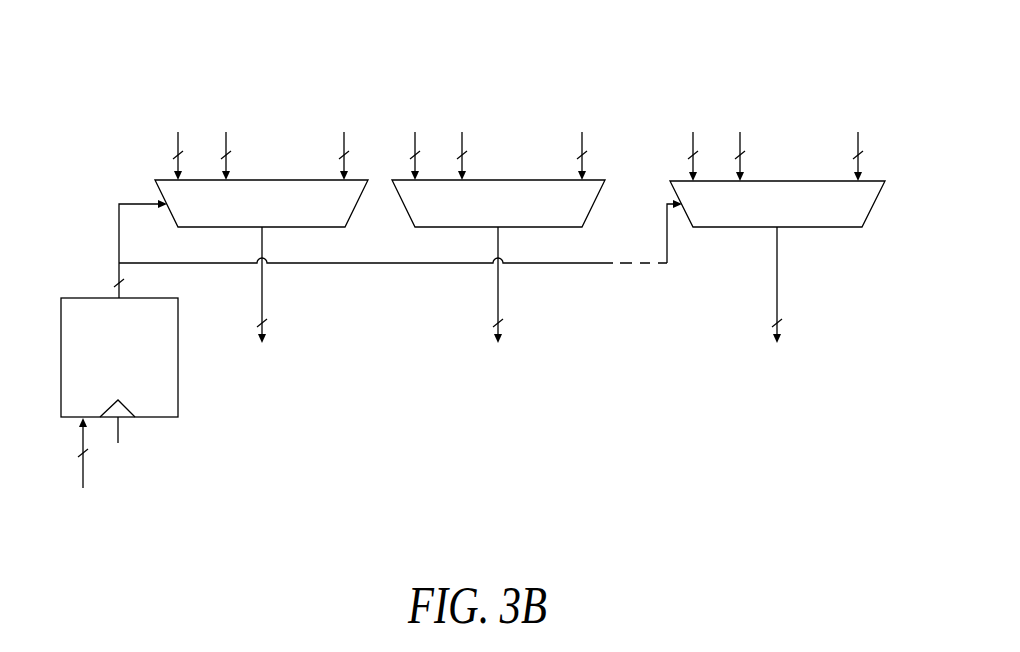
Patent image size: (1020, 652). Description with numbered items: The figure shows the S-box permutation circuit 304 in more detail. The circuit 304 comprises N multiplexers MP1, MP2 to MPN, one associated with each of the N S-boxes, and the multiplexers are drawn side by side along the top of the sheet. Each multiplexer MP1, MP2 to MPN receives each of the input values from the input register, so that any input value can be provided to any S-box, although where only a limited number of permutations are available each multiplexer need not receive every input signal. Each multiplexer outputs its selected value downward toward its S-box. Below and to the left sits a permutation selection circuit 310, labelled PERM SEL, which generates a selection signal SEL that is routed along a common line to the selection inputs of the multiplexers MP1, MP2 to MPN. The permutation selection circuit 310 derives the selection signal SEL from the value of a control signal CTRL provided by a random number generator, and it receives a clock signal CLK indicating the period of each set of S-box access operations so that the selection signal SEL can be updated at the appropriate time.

The S-box permutation circuit 304 is at (781, 65).
The permutation selection circuit 310 is at (163, 388).
The multiplexer MP1 is at (311, 215).
The multiplexer MP2 is at (547, 215).
The multiplexer MPN is at (826, 215).
The selection signal SEL is at (398, 249).
The clock signal CLK is at (113, 441).
The control signal CTRL is at (86, 466).